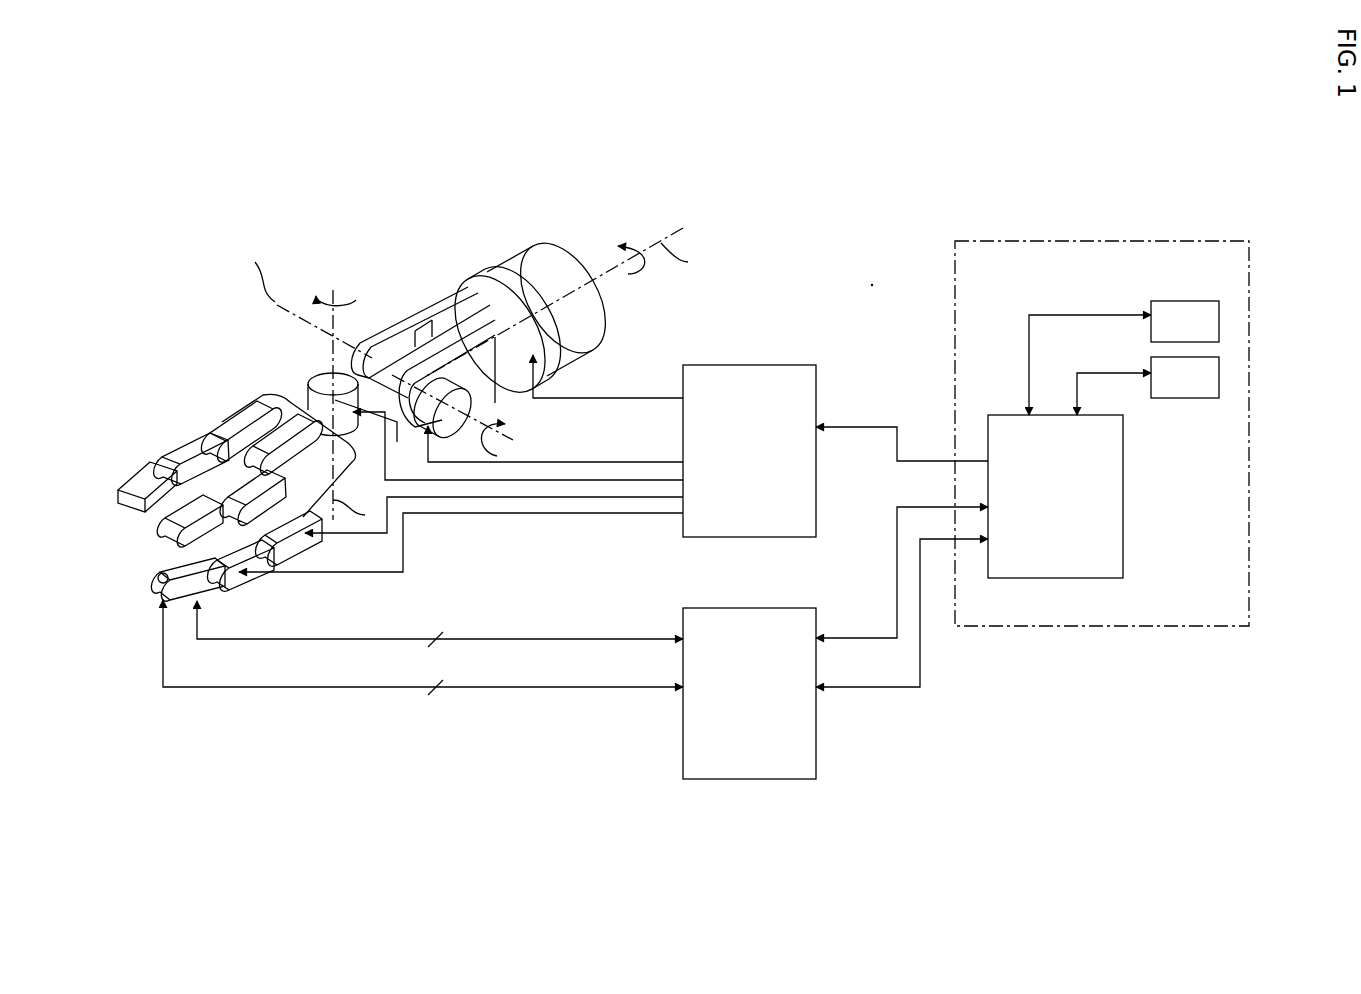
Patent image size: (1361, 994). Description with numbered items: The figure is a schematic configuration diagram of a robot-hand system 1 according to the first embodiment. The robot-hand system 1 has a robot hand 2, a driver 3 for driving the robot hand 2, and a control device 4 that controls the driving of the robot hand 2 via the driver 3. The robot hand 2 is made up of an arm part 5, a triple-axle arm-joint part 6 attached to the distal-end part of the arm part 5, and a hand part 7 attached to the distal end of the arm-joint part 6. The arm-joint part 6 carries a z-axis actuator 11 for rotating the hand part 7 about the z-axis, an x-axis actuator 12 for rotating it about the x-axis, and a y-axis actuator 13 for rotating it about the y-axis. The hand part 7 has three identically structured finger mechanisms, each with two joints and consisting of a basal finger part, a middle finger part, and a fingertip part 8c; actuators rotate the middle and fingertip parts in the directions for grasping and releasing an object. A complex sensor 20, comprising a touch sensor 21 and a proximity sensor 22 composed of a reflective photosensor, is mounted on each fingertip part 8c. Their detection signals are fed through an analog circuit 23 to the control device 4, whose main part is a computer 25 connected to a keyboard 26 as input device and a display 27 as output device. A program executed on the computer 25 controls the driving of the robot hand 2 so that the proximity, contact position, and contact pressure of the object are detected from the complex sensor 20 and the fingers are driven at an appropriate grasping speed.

The robot-hand system 1 is at (828, 200).
The robot hand 2 is at (332, 255).
The driver 3 is at (748, 362).
The control device 4 is at (1122, 240).
The arm part 5 is at (540, 246).
The triple-axle arm-joint part 6 is at (415, 322).
The hand part 7 is at (225, 413).
The fingertip part 8c is at (207, 588).
The z-axis actuator 11 is at (497, 290).
The x-axis actuator 12 is at (467, 407).
The y-axis actuator 13 is at (320, 375).
The complex sensor 20 is at (125, 678).
The touch sensor 21 is at (158, 586).
The proximity sensor 22 is at (163, 589).
The analog circuit 23 is at (745, 780).
The computer 25 is at (1045, 578).
The keyboard 26 is at (1220, 315).
The display 27 is at (1220, 373).